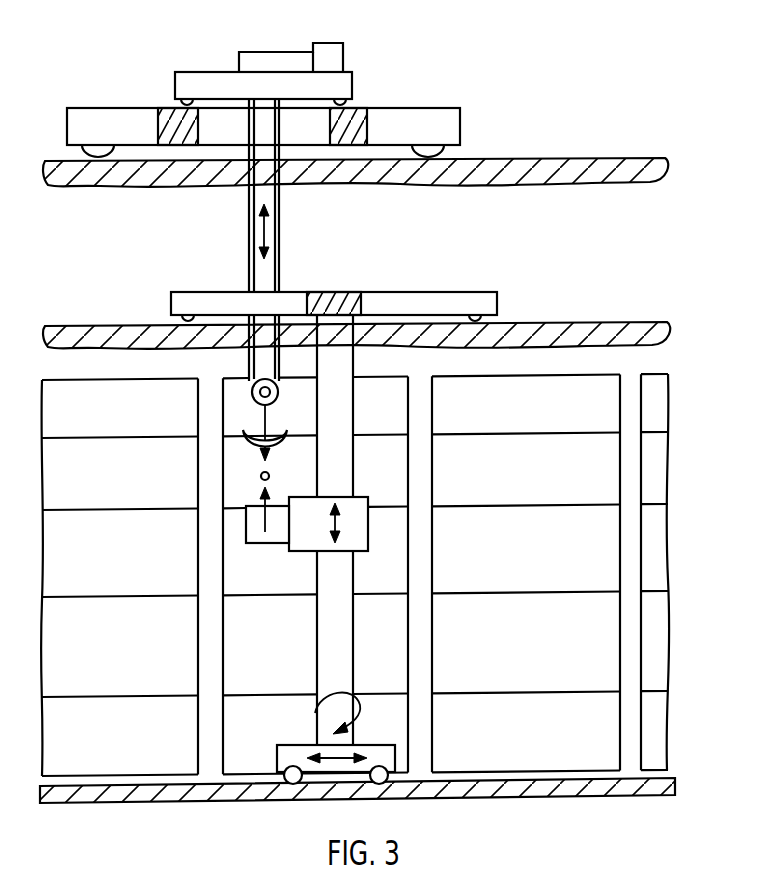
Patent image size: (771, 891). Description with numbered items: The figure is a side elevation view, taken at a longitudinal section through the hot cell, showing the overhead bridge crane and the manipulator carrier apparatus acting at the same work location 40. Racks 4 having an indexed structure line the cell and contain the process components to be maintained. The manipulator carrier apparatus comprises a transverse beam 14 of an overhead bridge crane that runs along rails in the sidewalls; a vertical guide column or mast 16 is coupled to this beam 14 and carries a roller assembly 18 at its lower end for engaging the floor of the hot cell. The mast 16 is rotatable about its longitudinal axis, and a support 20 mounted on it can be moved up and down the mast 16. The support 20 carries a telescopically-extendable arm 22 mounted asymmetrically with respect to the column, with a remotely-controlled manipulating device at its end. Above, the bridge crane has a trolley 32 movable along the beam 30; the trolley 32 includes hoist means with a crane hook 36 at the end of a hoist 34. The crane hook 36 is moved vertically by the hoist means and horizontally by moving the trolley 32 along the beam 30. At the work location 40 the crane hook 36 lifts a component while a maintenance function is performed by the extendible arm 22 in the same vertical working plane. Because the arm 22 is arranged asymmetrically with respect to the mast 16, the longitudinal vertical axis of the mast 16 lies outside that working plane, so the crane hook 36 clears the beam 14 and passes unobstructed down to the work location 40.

The racks 4 is at (620, 523).
The transverse beam 14 is at (483, 300).
The vertical guide column or mast 16 is at (342, 417).
The roller assembly 18 is at (385, 758).
The support 20 is at (369, 513).
The telescopically-extendable arm 22 is at (265, 532).
The beam 30 is at (440, 123).
The trolley 32 is at (343, 83).
The hoist 34 is at (280, 228).
The crane hook 36 is at (258, 448).
The work location 40 is at (259, 477).